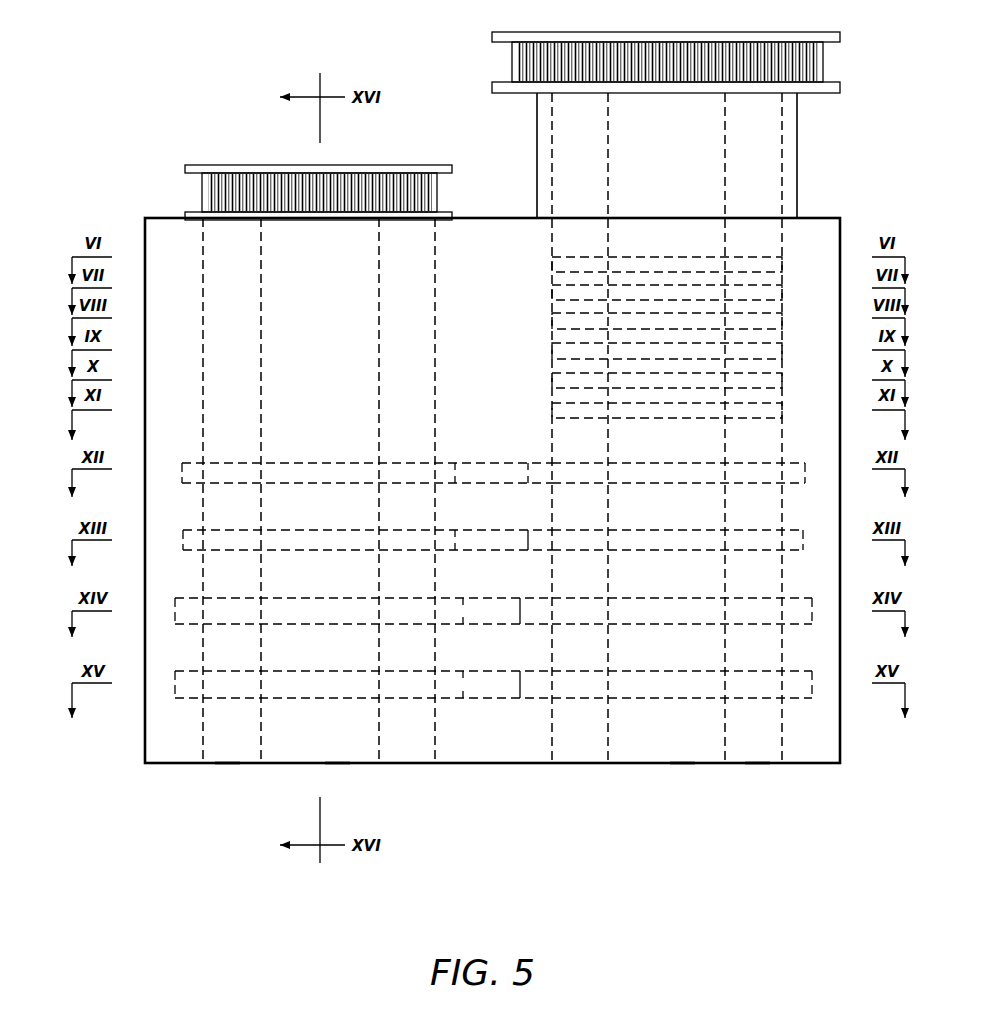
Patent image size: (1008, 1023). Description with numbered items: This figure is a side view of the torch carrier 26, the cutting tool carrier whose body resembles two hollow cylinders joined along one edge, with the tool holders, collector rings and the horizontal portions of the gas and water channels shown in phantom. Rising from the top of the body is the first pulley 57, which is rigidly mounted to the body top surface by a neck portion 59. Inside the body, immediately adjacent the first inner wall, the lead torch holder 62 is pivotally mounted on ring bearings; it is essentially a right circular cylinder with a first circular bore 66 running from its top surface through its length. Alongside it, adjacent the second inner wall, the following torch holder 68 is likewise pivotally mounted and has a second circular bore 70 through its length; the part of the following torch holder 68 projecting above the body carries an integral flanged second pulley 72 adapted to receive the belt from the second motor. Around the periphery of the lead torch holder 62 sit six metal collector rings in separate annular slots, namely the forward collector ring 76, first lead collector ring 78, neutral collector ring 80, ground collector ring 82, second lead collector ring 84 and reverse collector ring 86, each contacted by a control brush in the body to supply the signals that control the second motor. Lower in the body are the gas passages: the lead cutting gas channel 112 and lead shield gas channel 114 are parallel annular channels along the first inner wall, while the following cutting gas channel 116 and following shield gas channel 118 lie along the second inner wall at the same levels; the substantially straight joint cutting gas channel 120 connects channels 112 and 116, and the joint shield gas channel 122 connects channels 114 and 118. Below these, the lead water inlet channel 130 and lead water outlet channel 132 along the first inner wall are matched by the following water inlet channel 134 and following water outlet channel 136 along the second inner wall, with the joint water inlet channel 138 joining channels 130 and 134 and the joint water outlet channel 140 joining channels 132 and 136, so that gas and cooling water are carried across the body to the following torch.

The torch carrier 26 is at (141, 211).
The first pulley 57 is at (838, 38).
The neck portion 59 is at (797, 140).
The lead torch holder 62 is at (758, 765).
The first circular bore 66 is at (681, 769).
The following torch holder 68 is at (228, 765).
The second circular bore 70 is at (340, 770).
The second pulley 72 is at (190, 170).
The forward collector ring 76 is at (552, 262).
The first lead collector ring 78 is at (552, 290).
The neutral collector ring 80 is at (552, 318).
The ground collector ring 82 is at (552, 348).
The second lead collector ring 84 is at (552, 378).
The reverse collector ring 86 is at (552, 408).
The lead cutting gas channel 112 is at (806, 468).
The lead shield gas channel 114 is at (805, 546).
The following cutting gas channel 116 is at (182, 463).
The following shield gas channel 118 is at (183, 538).
The joint cutting gas channel 120 is at (513, 466).
The joint shield gas channel 122 is at (508, 537).
The lead water inlet channel 130 is at (812, 612).
The lead water outlet channel 132 is at (812, 687).
The following water inlet channel 134 is at (176, 605).
The following water outlet channel 136 is at (176, 680).
The joint water inlet channel 138 is at (500, 602).
The joint water outlet channel 140 is at (500, 680).